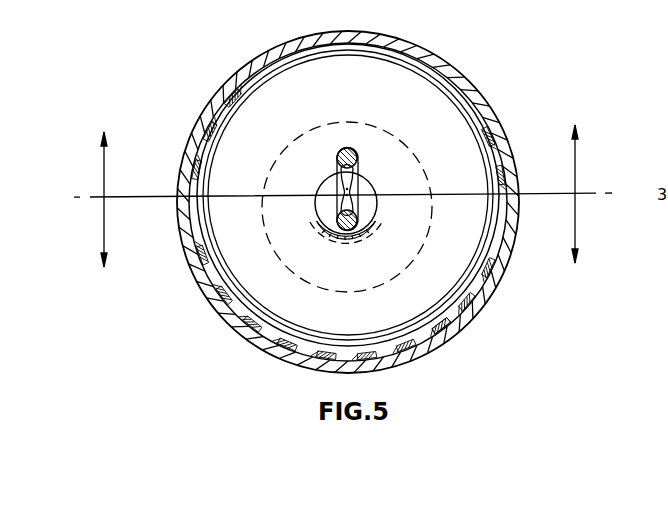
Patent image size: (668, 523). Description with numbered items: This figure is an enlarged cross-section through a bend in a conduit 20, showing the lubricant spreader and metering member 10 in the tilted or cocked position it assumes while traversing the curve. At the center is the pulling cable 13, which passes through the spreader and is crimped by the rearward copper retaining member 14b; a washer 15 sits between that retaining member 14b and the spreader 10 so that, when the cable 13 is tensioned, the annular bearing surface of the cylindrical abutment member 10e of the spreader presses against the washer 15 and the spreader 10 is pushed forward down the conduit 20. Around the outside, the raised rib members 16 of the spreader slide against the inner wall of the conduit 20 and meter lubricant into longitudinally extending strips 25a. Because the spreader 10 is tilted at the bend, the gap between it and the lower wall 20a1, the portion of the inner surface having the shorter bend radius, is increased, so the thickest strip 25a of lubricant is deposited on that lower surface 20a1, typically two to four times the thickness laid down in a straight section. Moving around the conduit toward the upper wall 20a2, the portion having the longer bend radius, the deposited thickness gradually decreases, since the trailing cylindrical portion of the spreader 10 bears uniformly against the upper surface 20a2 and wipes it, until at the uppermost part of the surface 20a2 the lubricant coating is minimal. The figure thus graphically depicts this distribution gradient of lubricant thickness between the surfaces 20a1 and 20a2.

The lubricant spreader and metering member 10 is at (235, 117).
The cylindrical abutment member 10e is at (358, 240).
The pulling cable 13 is at (357, 158).
The rearward copper retaining member 14b is at (330, 185).
The washer 15 is at (377, 205).
The raised rib members 16 is at (262, 342).
The conduit 20 is at (497, 287).
The lubricant strips 25a is at (443, 328).
The conduit inner wall portion having the shorter bend radius 20a1 is at (367, 240).
The conduit inner wall portion having the longer bend radius 20a2 is at (369, 196).